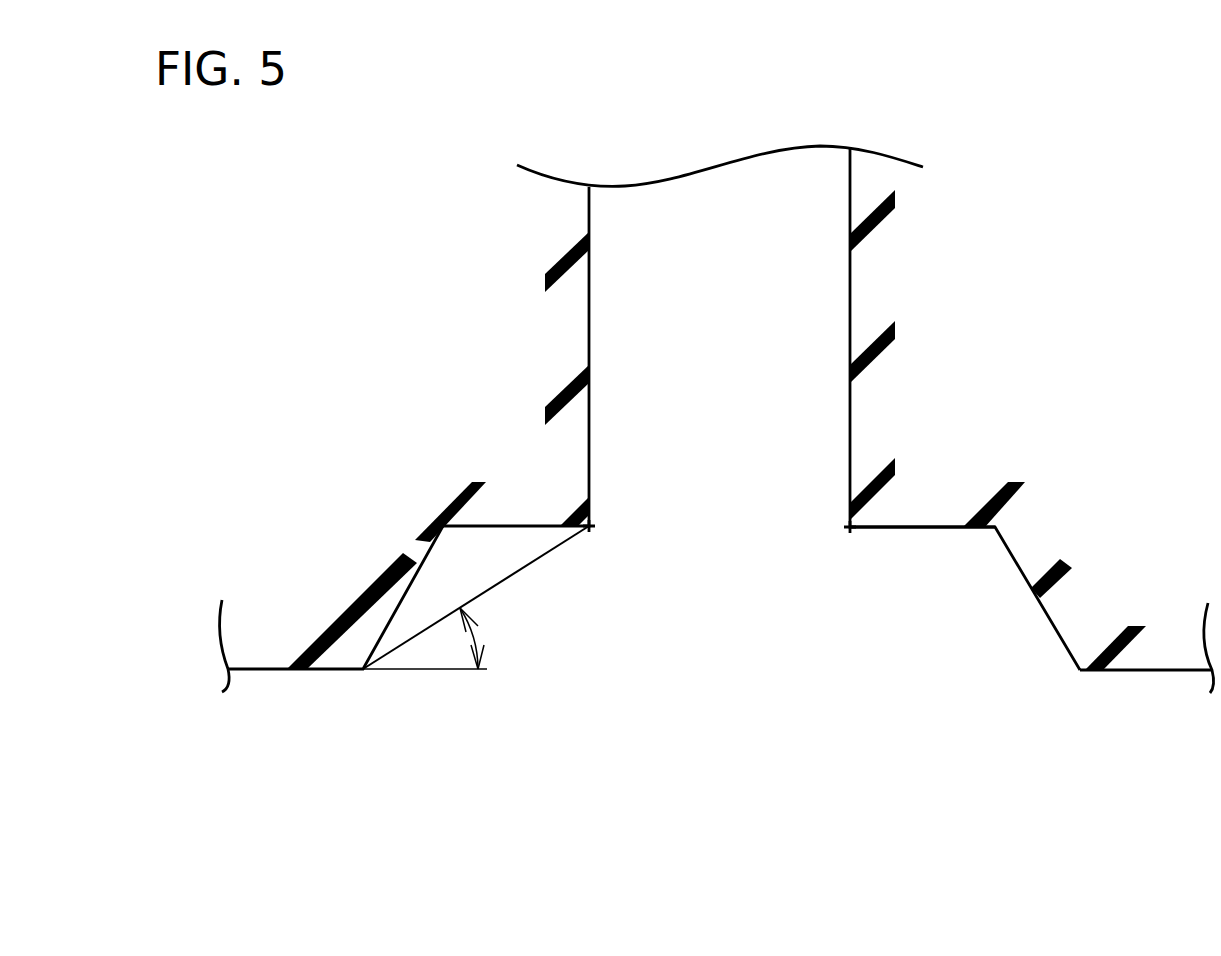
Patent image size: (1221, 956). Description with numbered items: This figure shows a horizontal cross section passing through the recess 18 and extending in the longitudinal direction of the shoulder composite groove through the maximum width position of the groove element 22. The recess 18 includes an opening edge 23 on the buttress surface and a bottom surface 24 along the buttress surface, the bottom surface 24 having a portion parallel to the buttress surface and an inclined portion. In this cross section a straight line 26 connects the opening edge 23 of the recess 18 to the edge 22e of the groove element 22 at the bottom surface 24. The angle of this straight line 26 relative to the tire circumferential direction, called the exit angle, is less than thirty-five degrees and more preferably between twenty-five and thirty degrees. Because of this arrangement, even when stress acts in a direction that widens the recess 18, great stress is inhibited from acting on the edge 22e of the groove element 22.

The groove element 22 is at (730, 330).
The edge of the groove element 22e is at (589, 528).
The opening edge 23 is at (363, 669).
The bottom surface 24 is at (922, 527).
The straight line 26 is at (500, 578).
The recess 18 is at (720, 623).